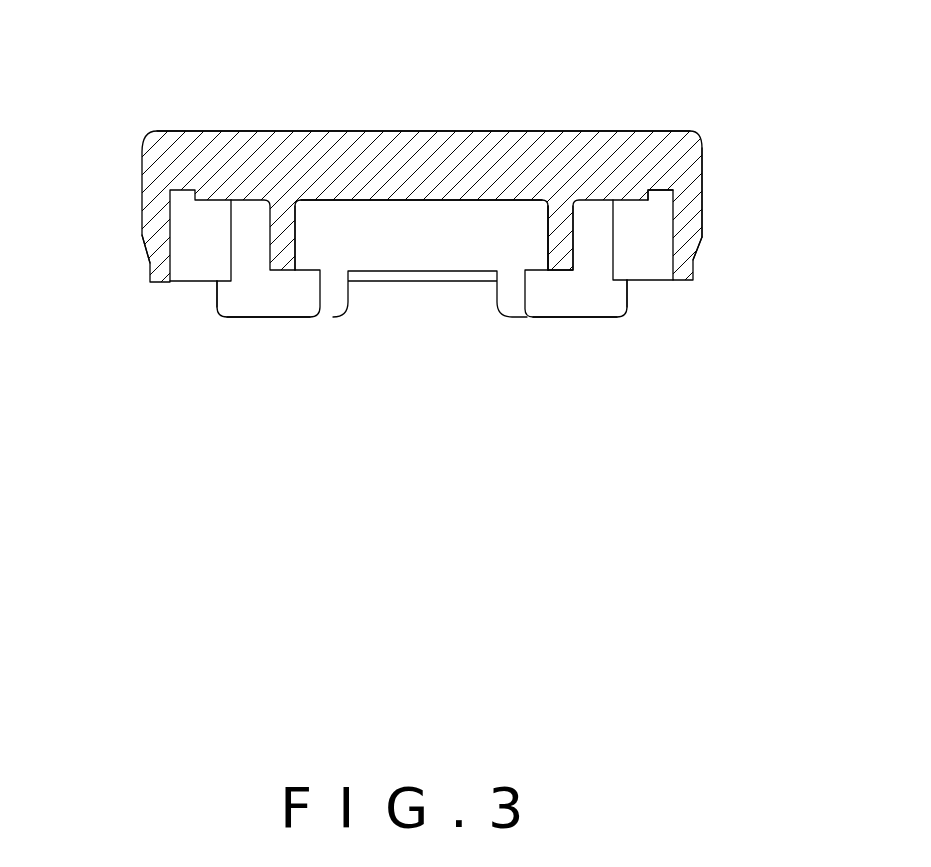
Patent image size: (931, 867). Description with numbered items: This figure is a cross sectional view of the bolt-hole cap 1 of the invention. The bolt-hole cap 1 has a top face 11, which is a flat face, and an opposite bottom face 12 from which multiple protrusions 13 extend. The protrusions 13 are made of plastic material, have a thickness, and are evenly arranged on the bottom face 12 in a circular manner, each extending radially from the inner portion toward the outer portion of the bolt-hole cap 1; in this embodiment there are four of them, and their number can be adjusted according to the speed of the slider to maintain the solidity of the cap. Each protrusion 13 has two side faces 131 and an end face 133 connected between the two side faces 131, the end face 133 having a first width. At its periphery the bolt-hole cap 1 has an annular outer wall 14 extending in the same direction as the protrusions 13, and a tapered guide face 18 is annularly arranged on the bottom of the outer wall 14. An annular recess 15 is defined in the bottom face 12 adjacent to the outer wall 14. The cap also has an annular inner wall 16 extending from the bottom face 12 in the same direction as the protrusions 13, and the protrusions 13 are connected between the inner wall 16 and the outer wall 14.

The bolt-hole cap 1 is at (708, 118).
The top face 11 is at (518, 130).
The bottom face 12 is at (447, 200).
The protrusion 13 is at (327, 293).
The side face 131 is at (270, 283).
The end face 133 is at (272, 318).
The outer wall 14 is at (703, 193).
The annular recess 15 is at (660, 195).
The inner wall 16 is at (560, 260).
The guide face 18 is at (147, 247).